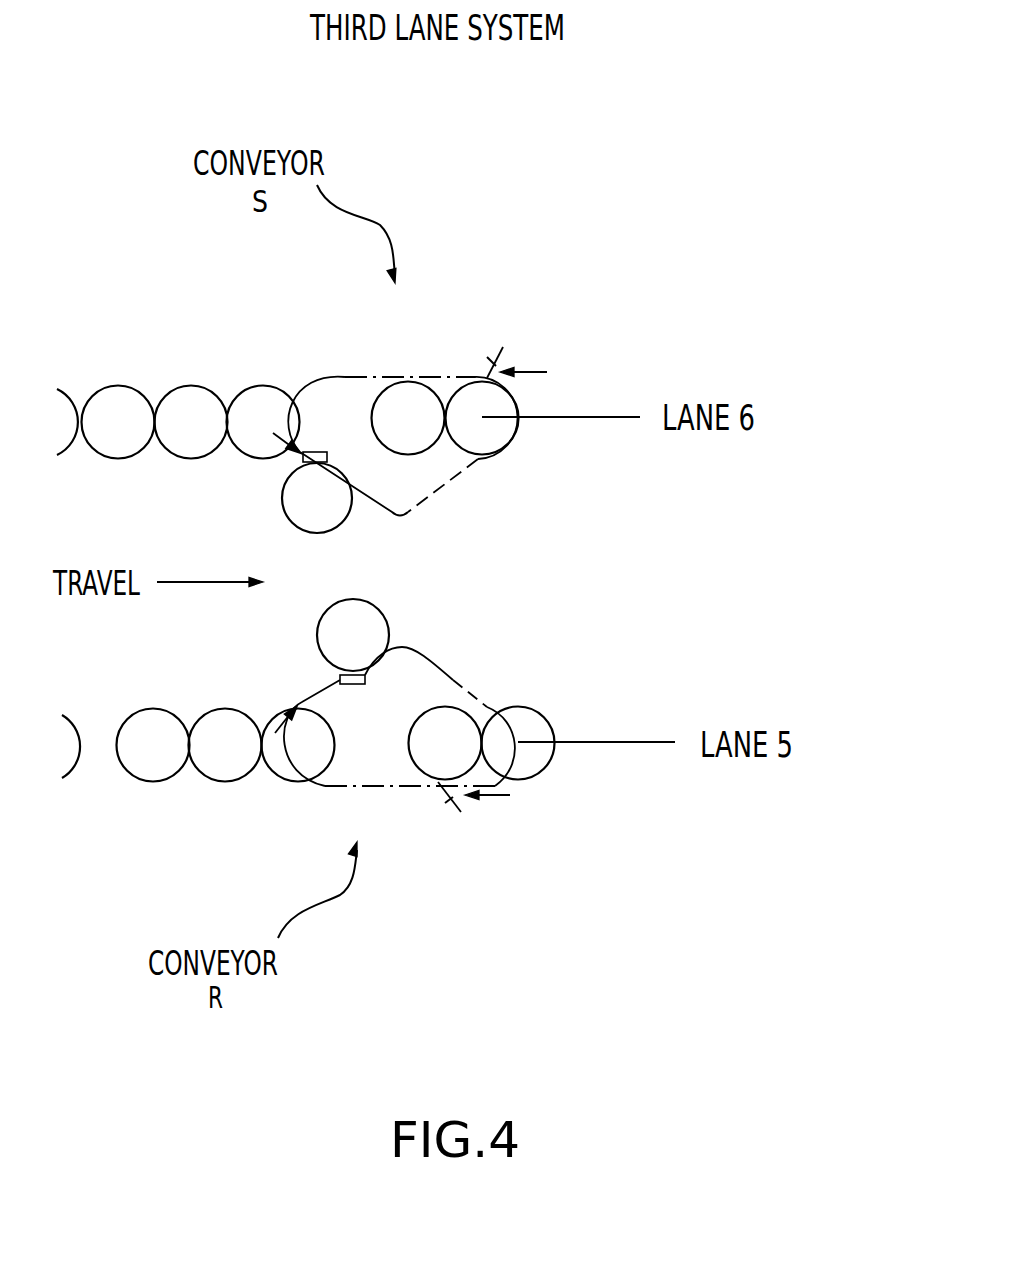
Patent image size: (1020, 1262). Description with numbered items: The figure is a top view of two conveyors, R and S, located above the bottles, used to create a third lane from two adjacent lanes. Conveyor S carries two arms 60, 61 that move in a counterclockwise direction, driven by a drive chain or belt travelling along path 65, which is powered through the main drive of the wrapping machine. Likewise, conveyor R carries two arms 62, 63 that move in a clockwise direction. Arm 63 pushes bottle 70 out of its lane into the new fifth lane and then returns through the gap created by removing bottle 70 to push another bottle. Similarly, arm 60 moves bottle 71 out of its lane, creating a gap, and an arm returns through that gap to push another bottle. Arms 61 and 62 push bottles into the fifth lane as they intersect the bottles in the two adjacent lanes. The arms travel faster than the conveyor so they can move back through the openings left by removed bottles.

The arm 60 is at (320, 440).
The arm 61 is at (508, 340).
The arm 62 is at (468, 822).
The arm 63 is at (328, 683).
The path 65 is at (455, 507).
The bottle 70 is at (369, 651).
The bottle 71 is at (331, 517).